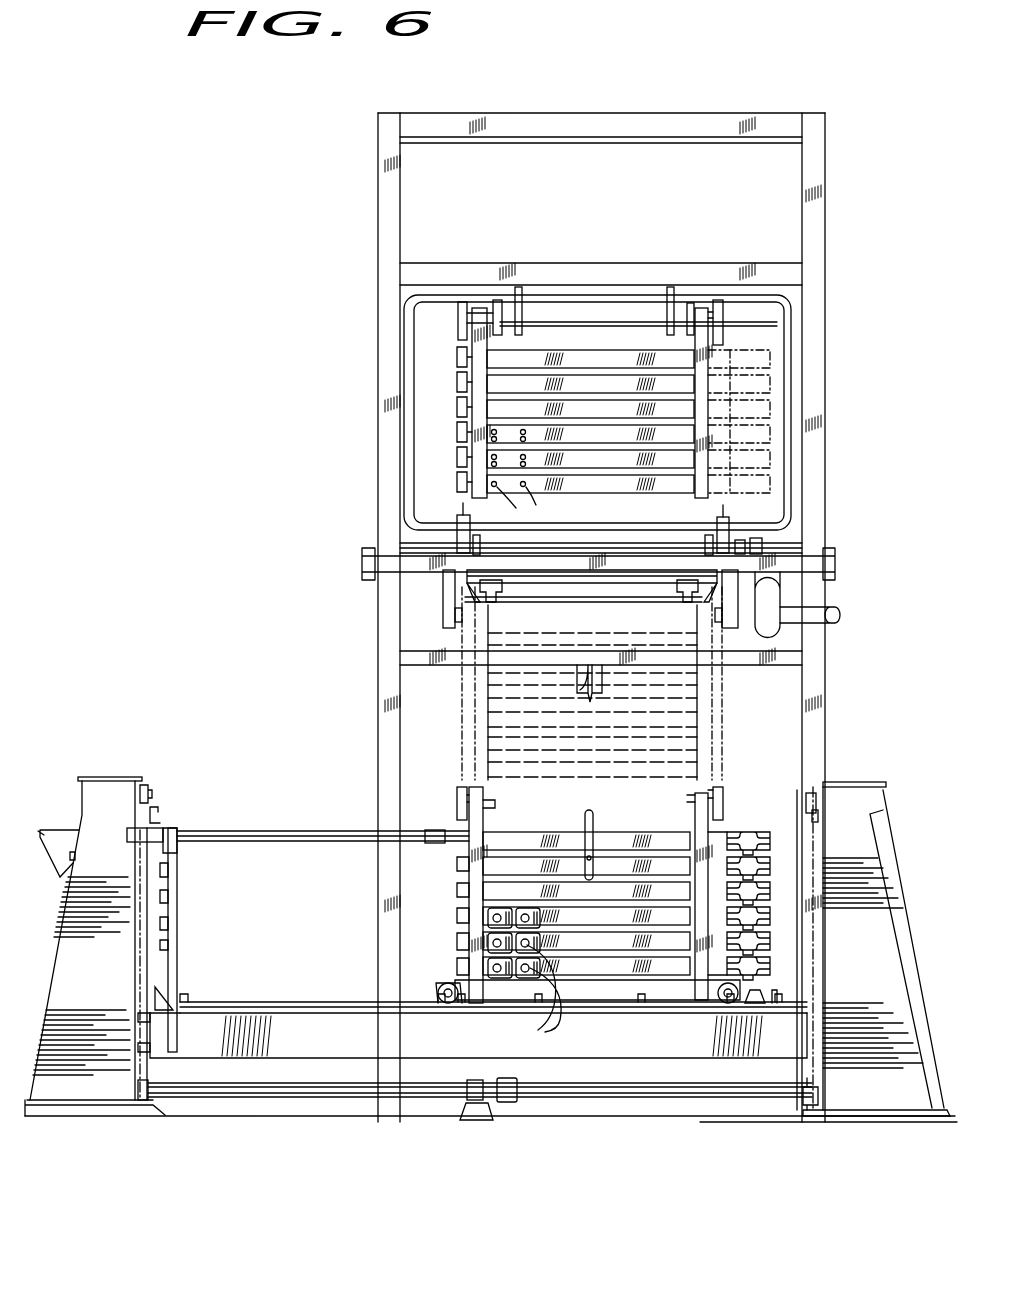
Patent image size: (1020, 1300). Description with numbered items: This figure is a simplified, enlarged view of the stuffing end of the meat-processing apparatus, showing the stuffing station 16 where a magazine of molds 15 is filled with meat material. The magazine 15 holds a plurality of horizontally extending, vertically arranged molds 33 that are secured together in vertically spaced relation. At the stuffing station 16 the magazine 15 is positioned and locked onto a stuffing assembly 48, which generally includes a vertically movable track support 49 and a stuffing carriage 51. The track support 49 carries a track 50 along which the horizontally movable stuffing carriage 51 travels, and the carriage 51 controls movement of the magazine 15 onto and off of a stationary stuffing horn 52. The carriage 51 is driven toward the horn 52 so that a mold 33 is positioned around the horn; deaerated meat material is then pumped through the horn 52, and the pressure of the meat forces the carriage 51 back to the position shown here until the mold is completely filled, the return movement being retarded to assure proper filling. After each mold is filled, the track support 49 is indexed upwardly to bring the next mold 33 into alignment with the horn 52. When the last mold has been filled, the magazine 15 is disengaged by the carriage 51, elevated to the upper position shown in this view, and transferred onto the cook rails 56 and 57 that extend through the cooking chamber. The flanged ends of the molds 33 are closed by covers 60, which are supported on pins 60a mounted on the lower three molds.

The magazine of molds 15 is at (732, 827).
The stuffing station 16 is at (836, 770).
The molds 33 is at (542, 852).
The stuffing assembly 48 is at (784, 1034).
The vertically movable track support 49 is at (637, 1043).
The track 50 is at (296, 1000).
The stuffing carriage 51 is at (472, 905).
The stuffing horn 52 is at (428, 828).
The cook rail 56 is at (462, 330).
The cook rail 57 is at (722, 330).
The cover 60 is at (493, 930).
The pins 60a is at (538, 515).